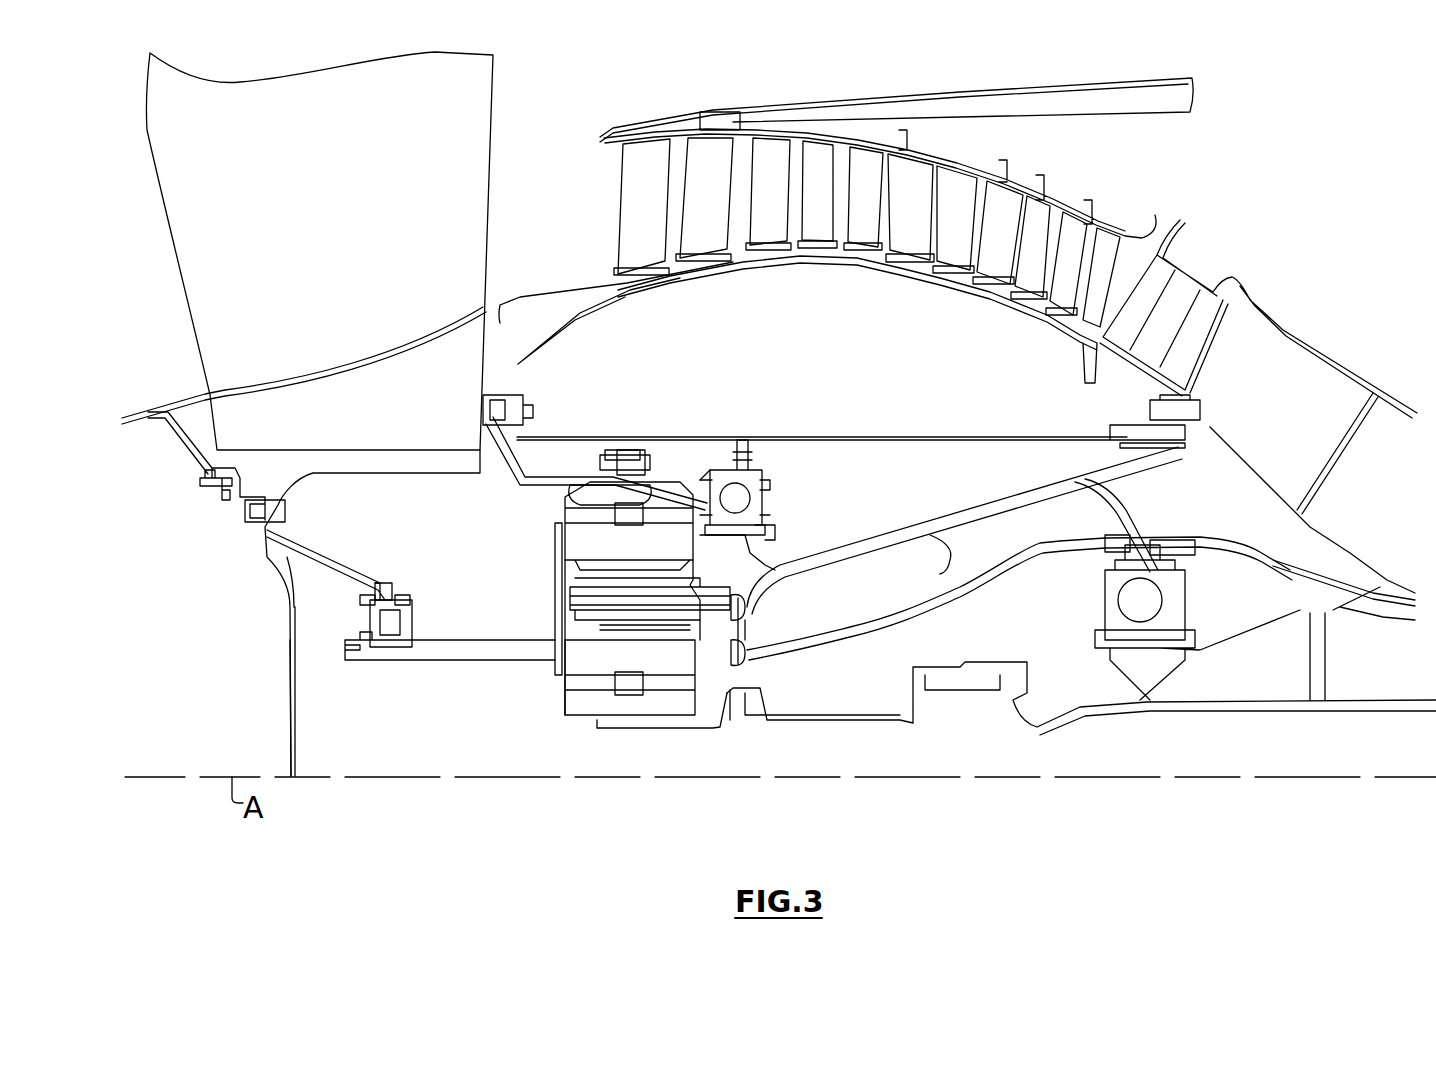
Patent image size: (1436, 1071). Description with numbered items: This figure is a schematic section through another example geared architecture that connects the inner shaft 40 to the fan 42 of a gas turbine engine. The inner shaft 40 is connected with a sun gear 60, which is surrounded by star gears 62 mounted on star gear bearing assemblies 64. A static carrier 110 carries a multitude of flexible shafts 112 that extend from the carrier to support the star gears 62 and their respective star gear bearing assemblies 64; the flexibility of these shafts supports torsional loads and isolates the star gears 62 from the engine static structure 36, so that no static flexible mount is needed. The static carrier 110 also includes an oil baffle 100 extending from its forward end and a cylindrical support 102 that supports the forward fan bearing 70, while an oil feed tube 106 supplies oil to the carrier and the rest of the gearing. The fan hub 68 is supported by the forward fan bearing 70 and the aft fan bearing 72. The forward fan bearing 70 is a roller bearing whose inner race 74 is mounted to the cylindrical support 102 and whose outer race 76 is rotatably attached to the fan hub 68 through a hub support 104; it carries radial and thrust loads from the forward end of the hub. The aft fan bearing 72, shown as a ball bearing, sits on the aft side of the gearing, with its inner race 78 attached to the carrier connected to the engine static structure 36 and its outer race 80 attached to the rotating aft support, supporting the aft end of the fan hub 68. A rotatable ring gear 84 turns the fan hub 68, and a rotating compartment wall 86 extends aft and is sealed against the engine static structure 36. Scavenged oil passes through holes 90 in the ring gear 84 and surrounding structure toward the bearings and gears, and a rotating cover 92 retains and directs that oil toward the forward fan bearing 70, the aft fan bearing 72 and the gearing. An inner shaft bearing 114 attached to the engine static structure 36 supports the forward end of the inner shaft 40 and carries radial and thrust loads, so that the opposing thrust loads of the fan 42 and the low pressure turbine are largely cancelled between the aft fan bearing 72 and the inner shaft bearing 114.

The fan 42 is at (333, 216).
The fan hub 68 is at (300, 462).
The rotating compartment wall 86 is at (795, 437).
The rotatable ring gear 84 is at (590, 492).
The holes 90 is at (725, 462).
The outer race 80 is at (750, 480).
The aft fan bearing 72 is at (783, 484).
The inner race 78 is at (765, 528).
The hub support 104 is at (358, 512).
The oil baffle 100 is at (558, 555).
The forward fan bearing 70 is at (408, 590).
The flexible shafts 112 is at (575, 598).
The star gear bearing assemblies 64 is at (575, 636).
The static carrier 110 is at (760, 613).
The engine static structure 36 is at (940, 574).
The oil feed tube 106 is at (977, 592).
The inner race 74 is at (375, 640).
The outer race 76 is at (405, 615).
The inner shaft bearing 114 is at (1092, 603).
The cylindrical support 102 is at (445, 660).
The star gears 62 is at (572, 665).
The rotating cover 92 is at (290, 683).
The inner shaft 40 is at (800, 718).
The sun gear 60 is at (560, 720).